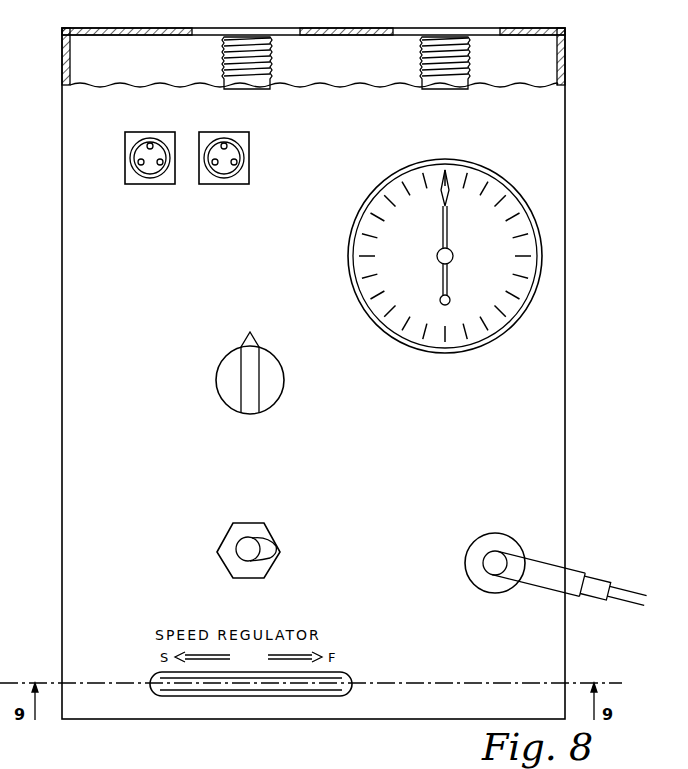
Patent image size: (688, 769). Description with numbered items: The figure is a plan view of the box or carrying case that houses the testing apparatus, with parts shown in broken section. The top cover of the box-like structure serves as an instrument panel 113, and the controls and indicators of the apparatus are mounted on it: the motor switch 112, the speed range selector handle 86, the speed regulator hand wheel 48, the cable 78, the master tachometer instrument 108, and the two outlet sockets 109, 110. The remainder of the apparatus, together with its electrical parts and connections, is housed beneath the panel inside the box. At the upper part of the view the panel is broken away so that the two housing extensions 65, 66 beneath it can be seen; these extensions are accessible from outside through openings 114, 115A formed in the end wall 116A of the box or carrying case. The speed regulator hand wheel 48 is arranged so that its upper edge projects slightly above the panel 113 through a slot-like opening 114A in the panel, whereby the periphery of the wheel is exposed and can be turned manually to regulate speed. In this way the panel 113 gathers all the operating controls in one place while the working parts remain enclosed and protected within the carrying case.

The end wall 116A is at (149, 28).
The opening 115A is at (260, 29).
The opening 114 is at (409, 30).
The housing extension 66 is at (272, 60).
The housing extension 65 is at (468, 58).
The outlet socket 109 is at (145, 182).
The outlet socket 110 is at (219, 182).
The master tachometer instrument 108 is at (445, 256).
The speed range selector handle 86 is at (272, 392).
The instrument panel 113 is at (448, 427).
The motor switch 112 is at (249, 562).
The speed regulator hand wheel 48 is at (353, 683).
The slot-like opening 114A is at (222, 696).
The cable 78 is at (535, 566).